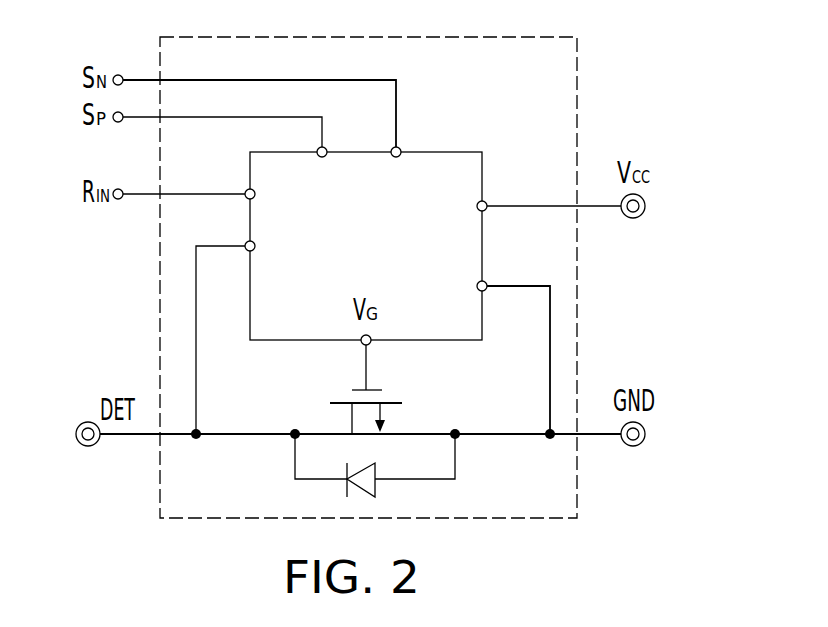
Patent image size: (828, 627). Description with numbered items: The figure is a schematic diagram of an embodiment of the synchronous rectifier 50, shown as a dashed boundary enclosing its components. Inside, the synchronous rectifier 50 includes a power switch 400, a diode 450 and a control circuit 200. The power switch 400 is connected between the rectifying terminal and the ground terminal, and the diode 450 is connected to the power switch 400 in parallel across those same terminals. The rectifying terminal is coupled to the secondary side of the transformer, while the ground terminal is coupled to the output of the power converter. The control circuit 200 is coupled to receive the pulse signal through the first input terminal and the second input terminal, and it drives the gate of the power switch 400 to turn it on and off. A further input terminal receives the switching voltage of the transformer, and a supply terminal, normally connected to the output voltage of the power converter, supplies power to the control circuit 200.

The synchronous rectifier 50 is at (548, 70).
The control circuit 200 is at (440, 173).
The power switch 400 is at (397, 418).
The diode 450 is at (333, 468).